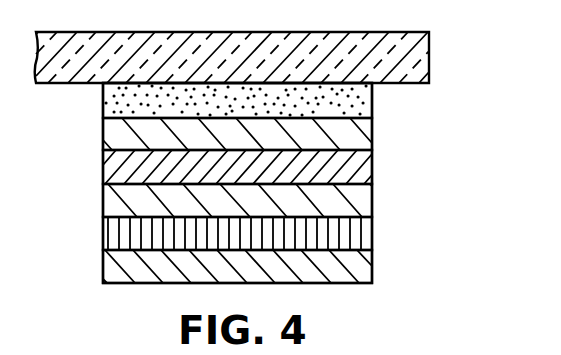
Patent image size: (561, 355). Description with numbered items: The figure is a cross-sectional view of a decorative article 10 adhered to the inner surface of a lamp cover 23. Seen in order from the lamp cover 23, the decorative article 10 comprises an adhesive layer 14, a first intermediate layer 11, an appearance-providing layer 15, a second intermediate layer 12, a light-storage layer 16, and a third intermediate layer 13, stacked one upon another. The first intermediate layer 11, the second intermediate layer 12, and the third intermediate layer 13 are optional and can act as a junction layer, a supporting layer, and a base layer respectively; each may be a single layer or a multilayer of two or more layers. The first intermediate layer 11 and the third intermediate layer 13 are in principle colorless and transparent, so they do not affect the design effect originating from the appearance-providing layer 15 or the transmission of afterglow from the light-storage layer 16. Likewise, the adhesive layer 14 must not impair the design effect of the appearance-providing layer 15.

The decorative article 10 is at (432, 90).
The first intermediate layer 11 is at (373, 137).
The second intermediate layer 12 is at (373, 200).
The third intermediate layer 13 is at (373, 268).
The adhesive layer 14 is at (374, 95).
The appearance-providing layer 15 is at (373, 168).
The light-storage layer 16 is at (373, 235).
The lamp cover 23 is at (414, 50).